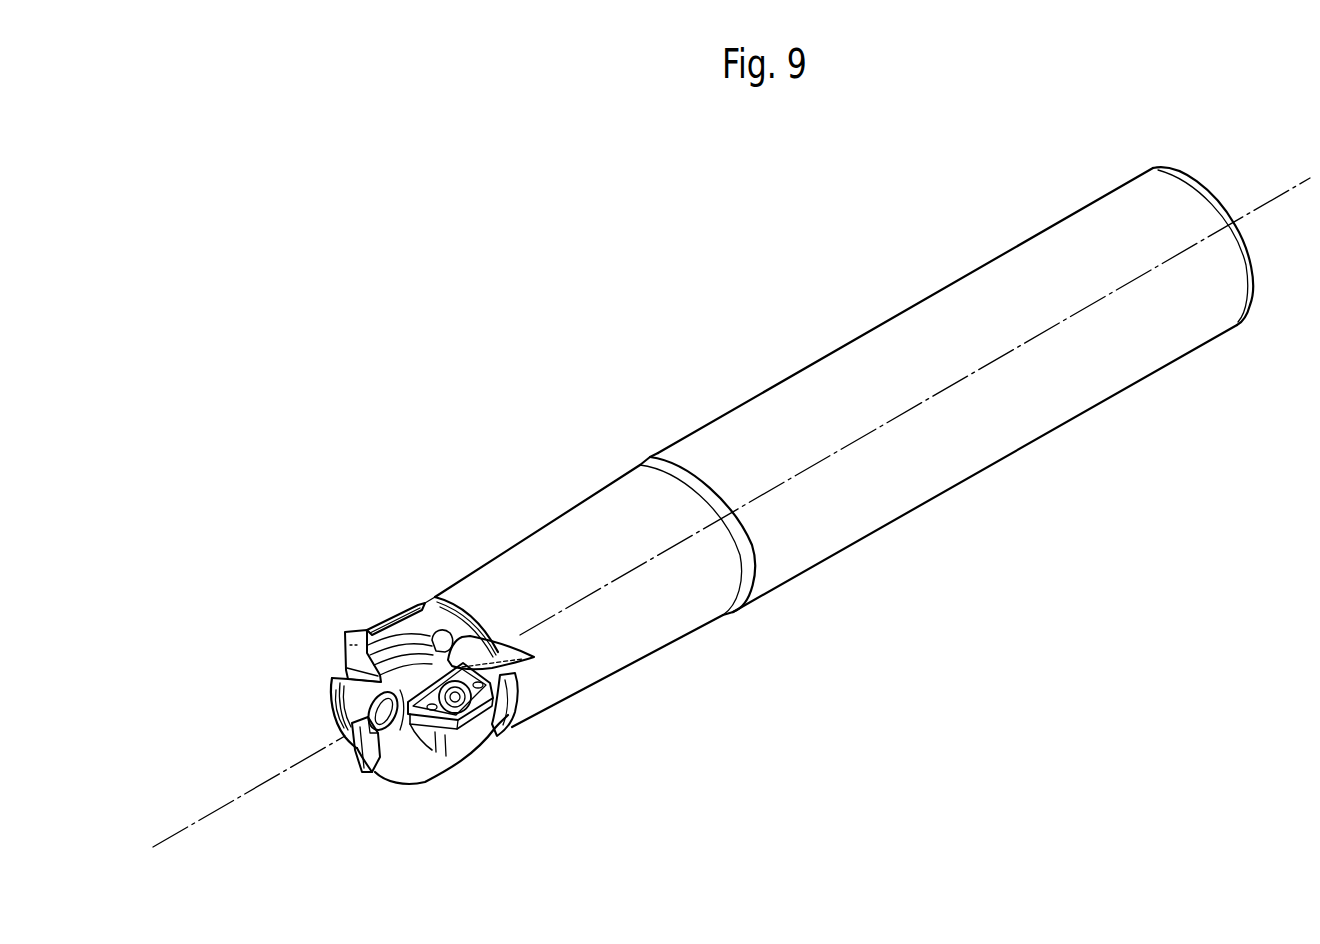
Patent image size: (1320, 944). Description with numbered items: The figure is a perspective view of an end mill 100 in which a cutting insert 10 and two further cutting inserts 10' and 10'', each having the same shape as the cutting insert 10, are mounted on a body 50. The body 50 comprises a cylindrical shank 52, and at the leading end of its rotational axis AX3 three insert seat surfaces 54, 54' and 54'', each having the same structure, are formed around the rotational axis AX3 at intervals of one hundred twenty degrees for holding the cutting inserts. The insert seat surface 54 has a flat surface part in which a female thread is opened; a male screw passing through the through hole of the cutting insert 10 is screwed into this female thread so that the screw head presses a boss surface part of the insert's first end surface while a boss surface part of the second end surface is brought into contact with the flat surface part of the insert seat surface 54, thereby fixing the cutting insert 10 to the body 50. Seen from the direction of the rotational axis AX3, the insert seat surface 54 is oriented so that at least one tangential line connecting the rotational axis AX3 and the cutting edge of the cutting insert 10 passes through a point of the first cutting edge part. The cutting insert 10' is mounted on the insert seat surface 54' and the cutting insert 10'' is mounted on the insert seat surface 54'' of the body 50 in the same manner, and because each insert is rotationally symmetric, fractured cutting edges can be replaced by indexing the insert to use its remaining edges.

The end mill 100 is at (798, 753).
The body 50 is at (603, 707).
The cylindrical shank 52 is at (625, 635).
The insert seat surface 54 is at (432, 725).
The insert seat surface 54' is at (398, 572).
The insert seat surface 54'' is at (320, 703).
The cutting insert 10 is at (503, 739).
The cutting insert 10' is at (331, 611).
The cutting insert 10'' is at (371, 781).
The rotational axis AX3 is at (197, 818).